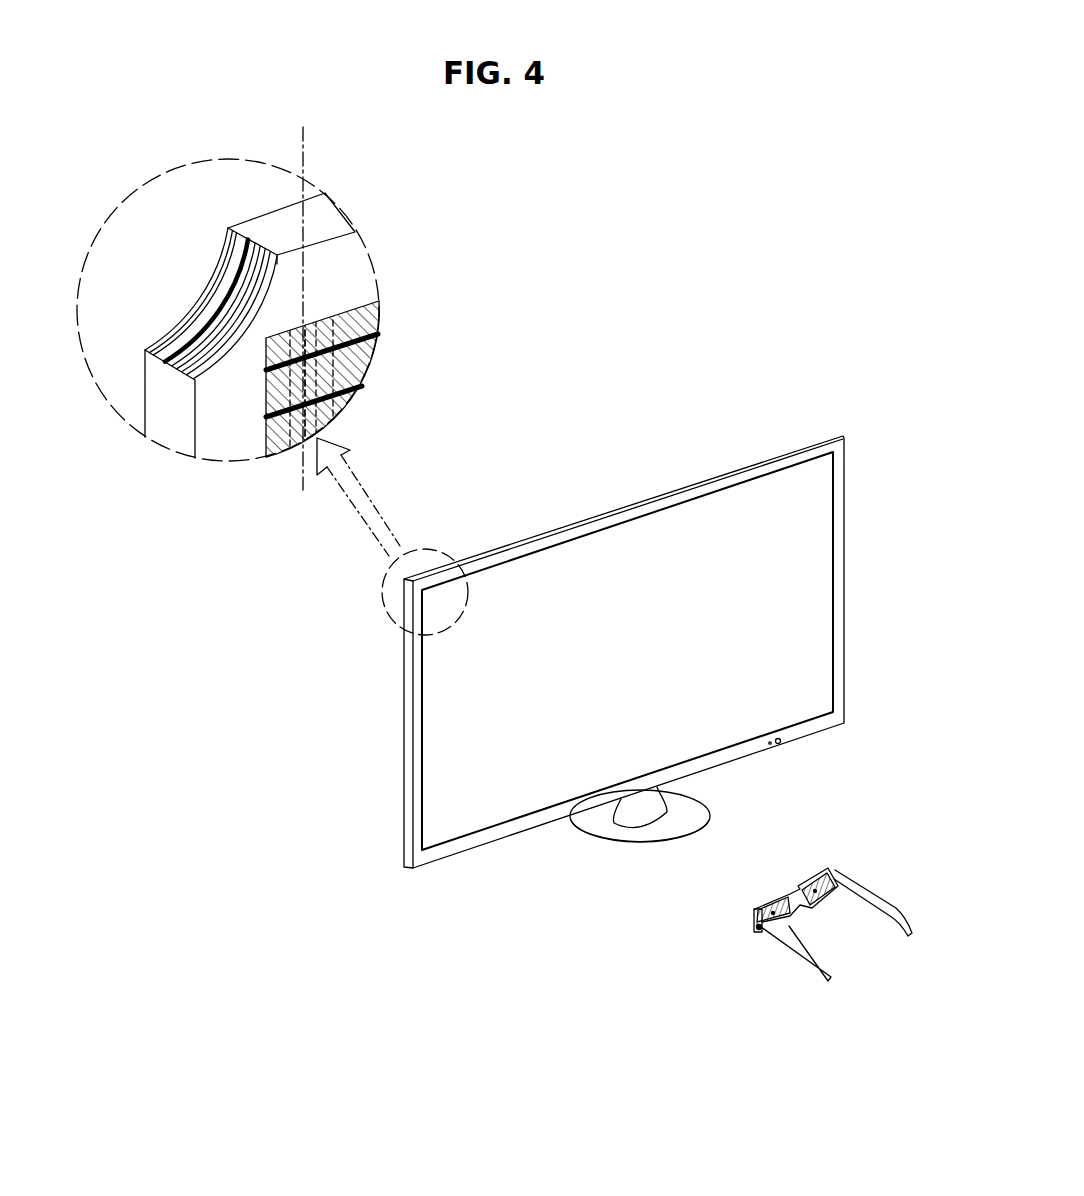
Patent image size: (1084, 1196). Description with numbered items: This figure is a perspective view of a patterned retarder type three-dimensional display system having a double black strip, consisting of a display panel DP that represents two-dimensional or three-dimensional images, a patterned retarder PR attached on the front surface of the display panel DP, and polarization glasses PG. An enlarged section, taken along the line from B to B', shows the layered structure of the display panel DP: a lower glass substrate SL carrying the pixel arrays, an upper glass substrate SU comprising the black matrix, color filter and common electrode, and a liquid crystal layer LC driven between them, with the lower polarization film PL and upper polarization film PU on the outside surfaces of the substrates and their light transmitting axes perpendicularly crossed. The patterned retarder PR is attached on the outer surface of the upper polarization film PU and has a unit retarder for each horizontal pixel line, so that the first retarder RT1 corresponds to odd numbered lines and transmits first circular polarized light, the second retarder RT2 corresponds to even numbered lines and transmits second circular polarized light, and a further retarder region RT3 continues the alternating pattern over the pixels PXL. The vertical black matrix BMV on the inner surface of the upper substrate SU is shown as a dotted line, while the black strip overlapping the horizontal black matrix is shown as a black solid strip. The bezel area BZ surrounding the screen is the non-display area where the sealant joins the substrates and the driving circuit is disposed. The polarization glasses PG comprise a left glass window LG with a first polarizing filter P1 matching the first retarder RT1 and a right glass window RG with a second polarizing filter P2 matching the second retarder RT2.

The lower polarization film PL is at (158, 343).
The lower glass substrate SL is at (188, 347).
The liquid crystal layer LC is at (212, 330).
The upper glass substrate SU is at (240, 302).
The upper polarization film PU is at (257, 300).
The patterned retarder PR is at (277, 256).
The display panel DP is at (210, 190).
The bezel area BZ is at (355, 262).
The first retarder RT1 is at (388, 299).
The second retarder RT2 is at (383, 357).
The third retarder region RT3 is at (341, 428).
The vertical black matrix BMV is at (383, 311).
The pixel PXL is at (333, 390).
The section line B is at (287, 306).
The section line B' is at (287, 491).
The polarization glasses PG is at (816, 915).
The left glass window LG is at (790, 920).
The right glass window RG is at (830, 899).
The first polarizing filter P1 is at (772, 912).
The second polarizing filter P2 is at (814, 890).